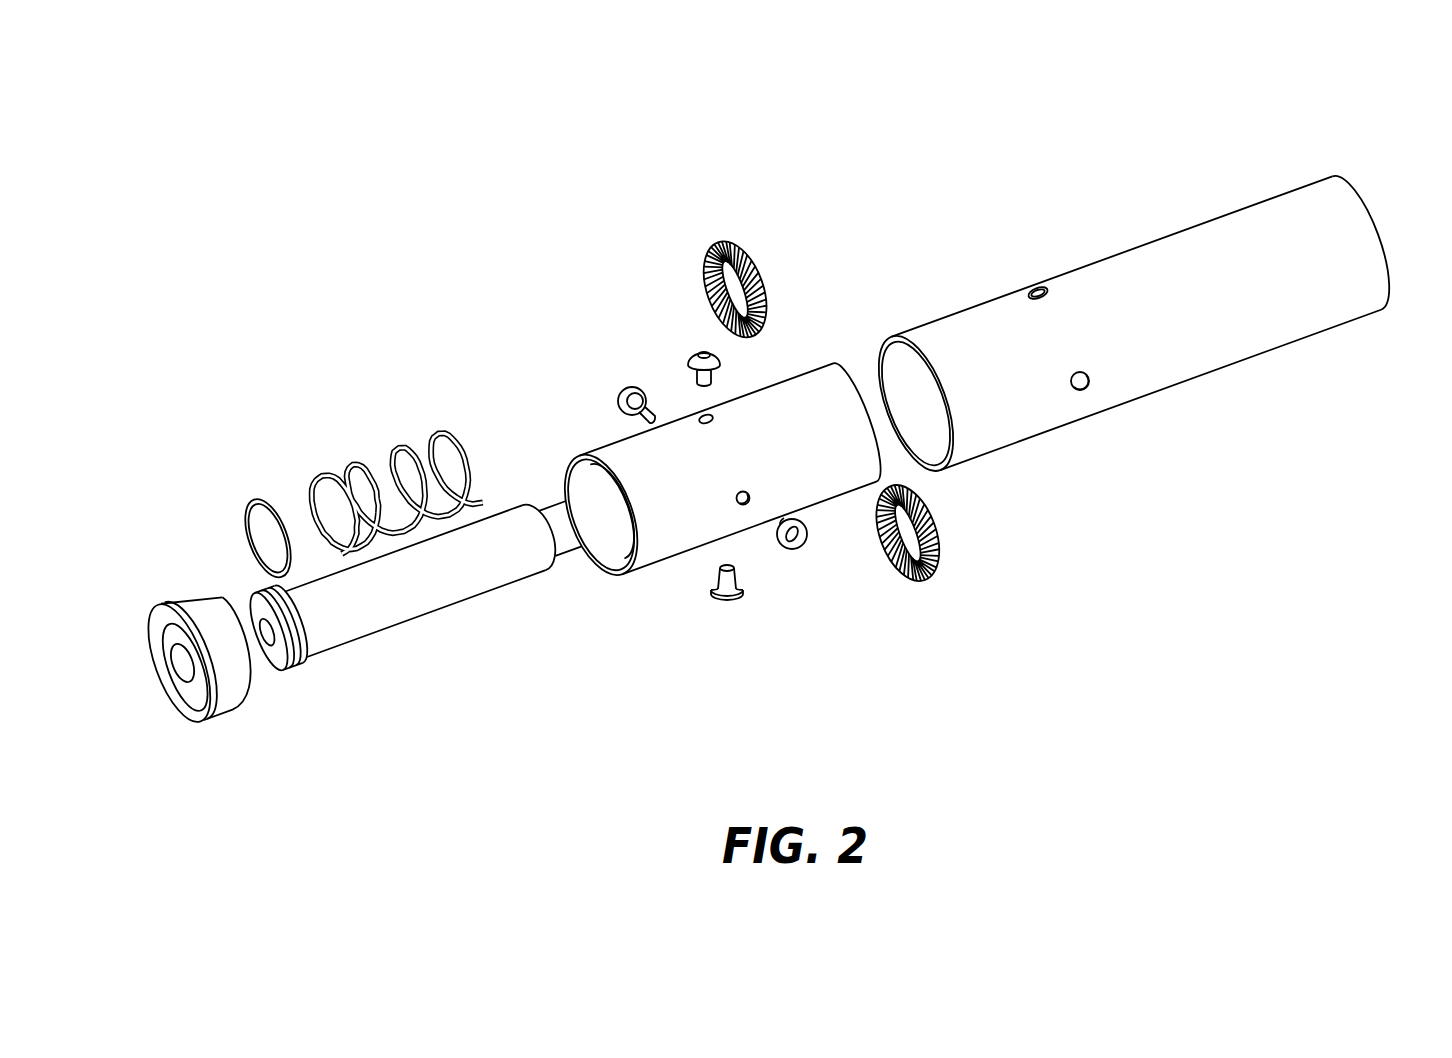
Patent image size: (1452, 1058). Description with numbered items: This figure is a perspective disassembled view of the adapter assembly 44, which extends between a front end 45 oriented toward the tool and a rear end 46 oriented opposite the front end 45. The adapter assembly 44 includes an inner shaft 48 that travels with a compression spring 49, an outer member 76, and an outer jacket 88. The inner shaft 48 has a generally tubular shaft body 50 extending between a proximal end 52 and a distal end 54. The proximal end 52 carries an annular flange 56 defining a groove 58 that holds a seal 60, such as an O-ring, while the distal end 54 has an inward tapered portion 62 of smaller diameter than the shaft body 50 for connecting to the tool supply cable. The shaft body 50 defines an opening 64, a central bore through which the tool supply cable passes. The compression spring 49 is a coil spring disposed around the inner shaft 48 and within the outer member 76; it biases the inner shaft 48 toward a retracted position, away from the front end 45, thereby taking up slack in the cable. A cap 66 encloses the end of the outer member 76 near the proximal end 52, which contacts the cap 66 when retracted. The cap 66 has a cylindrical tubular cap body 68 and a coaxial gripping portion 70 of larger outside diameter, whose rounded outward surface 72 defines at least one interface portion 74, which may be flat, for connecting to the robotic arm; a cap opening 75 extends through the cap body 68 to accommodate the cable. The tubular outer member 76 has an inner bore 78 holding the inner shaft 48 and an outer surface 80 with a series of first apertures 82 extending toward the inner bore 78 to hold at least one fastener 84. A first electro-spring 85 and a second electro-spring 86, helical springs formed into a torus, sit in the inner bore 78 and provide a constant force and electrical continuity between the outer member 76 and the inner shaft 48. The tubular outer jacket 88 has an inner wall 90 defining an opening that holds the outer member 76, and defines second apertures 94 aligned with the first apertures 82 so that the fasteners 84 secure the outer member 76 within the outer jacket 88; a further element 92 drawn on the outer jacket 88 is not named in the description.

The adapter assembly 44 is at (1360, 132).
The front end 45 is at (1376, 226).
The rear end 46 is at (190, 695).
The inner shaft 48 is at (397, 590).
The compression spring 49 is at (385, 461).
The shaft body 50 is at (387, 587).
The proximal end 52 is at (272, 648).
The distal end 54 is at (580, 483).
The annular flange 56 is at (290, 672).
The groove 58 is at (300, 668).
The seal 60 is at (262, 498).
The inward tapered portion 62 is at (555, 532).
The opening 64 is at (272, 635).
The cap 66 is at (165, 683).
The cap body 68 is at (197, 618).
The gripping portion 70 is at (223, 707).
The outward surface 72 is at (210, 633).
The interface portion 74 is at (210, 600).
The cap opening 75 is at (185, 665).
The outer member 76 is at (679, 440).
The inner bore 78 is at (593, 477).
The outer surface 80 is at (637, 468).
The first apertures 82 is at (704, 418).
The fastener 84 is at (735, 578).
The first electro-spring 85 is at (713, 262).
The second electro-spring 86 is at (938, 531).
The outer jacket 88 is at (1137, 282).
The inner wall 90 is at (910, 372).
The side aperture 92 is at (972, 332).
The second apertures 94 is at (1036, 290).